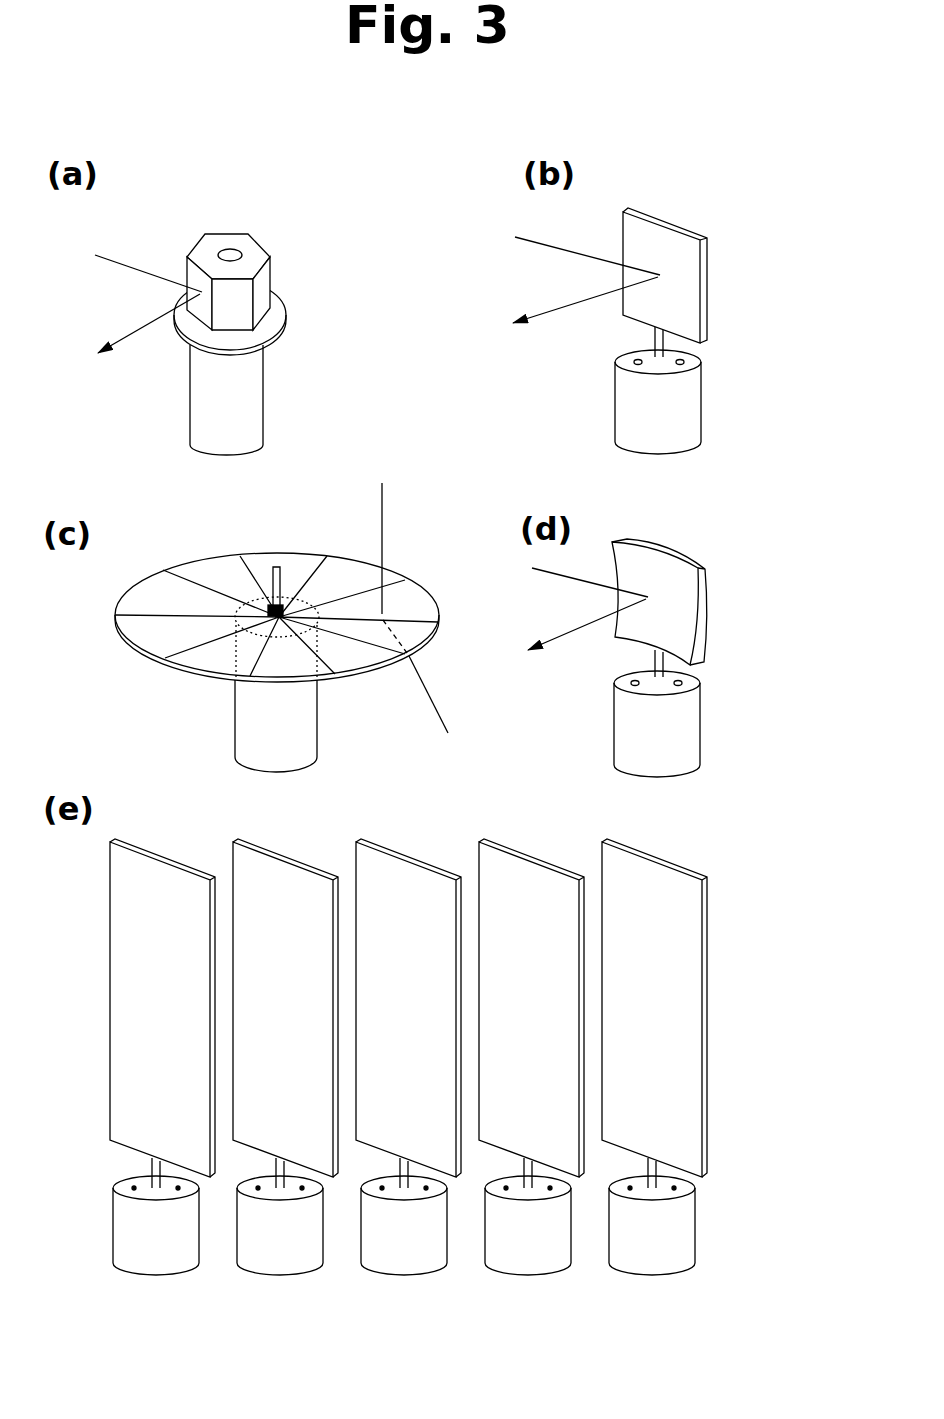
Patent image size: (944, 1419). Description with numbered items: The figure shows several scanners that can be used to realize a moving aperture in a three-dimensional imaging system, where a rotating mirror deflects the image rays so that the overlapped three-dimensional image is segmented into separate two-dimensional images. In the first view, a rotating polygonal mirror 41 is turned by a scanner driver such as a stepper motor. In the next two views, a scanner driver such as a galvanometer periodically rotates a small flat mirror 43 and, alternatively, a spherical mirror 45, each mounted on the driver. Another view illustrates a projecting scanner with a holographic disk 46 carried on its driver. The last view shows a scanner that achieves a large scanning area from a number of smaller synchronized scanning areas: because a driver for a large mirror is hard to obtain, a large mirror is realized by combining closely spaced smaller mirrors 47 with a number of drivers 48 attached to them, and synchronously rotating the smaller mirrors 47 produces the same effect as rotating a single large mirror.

The rotating polygonal mirror 41 is at (227, 233).
The small flat mirror 43 is at (707, 275).
The spherical mirror 45 is at (660, 552).
The rotating disk 46 is at (424, 572).
The smaller mirrors 47 is at (652, 1005).
The drivers 48 is at (657, 1265).